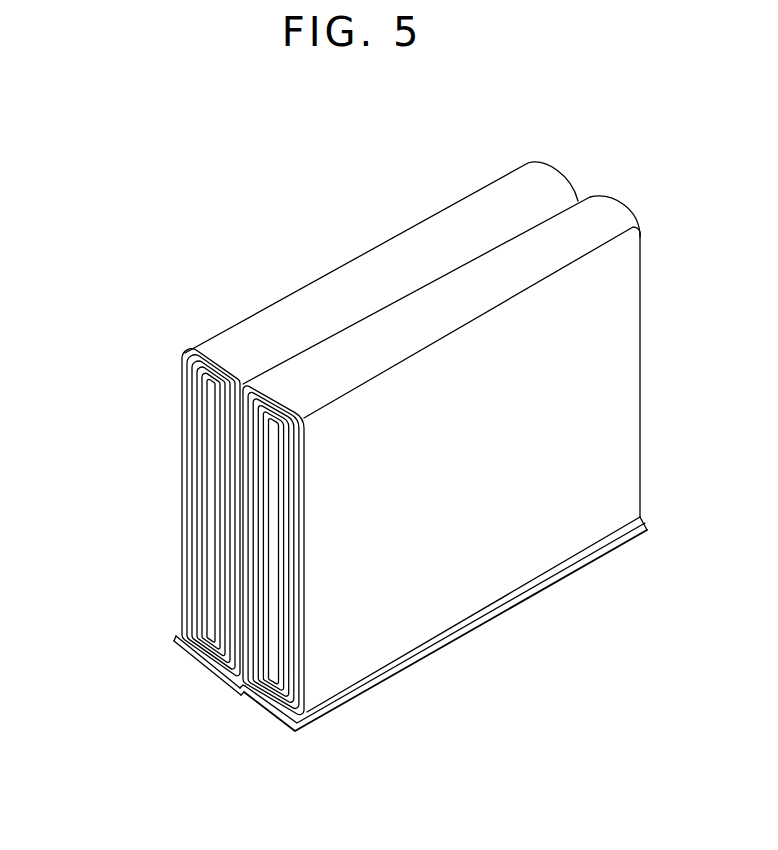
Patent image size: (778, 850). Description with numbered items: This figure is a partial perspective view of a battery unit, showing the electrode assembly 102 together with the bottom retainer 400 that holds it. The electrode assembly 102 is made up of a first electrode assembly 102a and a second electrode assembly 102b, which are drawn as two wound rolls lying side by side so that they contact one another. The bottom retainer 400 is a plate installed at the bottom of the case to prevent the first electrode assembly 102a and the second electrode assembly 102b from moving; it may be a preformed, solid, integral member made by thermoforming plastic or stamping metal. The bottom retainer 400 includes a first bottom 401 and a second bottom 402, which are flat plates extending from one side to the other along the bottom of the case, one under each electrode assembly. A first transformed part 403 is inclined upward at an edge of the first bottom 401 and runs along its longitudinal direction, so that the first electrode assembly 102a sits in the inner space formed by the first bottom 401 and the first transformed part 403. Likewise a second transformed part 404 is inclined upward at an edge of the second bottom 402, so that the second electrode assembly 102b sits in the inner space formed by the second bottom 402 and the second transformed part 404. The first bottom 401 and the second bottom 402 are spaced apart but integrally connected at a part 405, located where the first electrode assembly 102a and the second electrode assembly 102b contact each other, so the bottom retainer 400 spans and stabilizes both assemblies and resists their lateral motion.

The electrode assembly 102 is at (276, 167).
The first electrode assembly 102a is at (301, 304).
The second electrode assembly 102b is at (383, 328).
The bottom retainer 400 is at (156, 523).
The first bottom 401 is at (213, 685).
The second bottom 402 is at (273, 716).
The first transformed part 403 is at (180, 653).
The second transformed part 404 is at (305, 727).
The part 405 is at (242, 692).